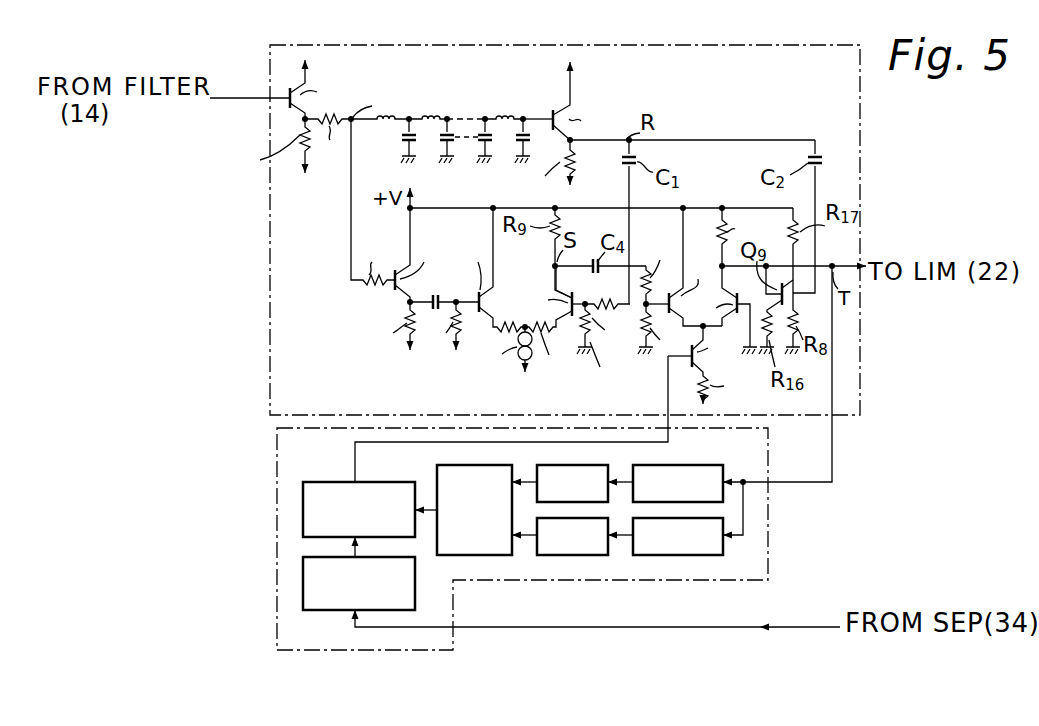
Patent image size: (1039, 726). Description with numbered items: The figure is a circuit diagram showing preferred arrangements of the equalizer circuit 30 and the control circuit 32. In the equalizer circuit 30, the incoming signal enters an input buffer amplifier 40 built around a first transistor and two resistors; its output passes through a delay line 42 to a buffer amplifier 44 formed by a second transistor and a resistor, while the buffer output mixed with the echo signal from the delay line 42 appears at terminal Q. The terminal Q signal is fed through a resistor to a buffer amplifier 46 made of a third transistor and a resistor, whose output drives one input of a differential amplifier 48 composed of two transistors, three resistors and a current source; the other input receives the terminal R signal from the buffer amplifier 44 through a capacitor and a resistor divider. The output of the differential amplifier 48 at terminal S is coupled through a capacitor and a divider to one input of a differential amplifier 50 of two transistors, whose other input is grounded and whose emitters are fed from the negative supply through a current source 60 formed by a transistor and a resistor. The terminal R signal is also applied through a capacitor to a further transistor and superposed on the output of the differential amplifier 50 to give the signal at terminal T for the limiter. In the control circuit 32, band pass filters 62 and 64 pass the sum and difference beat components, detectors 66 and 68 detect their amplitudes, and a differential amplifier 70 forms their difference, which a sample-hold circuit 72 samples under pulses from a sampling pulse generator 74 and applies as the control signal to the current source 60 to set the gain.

The equalizer circuit 30 is at (683, 45).
The control circuit 32 is at (272, 446).
The input buffer amplifier 40 is at (352, 82).
The delay line 42 is at (479, 110).
The buffer amplifier 44 is at (610, 93).
The buffer amplifier 46 is at (373, 305).
The differential amplifier 48 is at (540, 268).
The differential amplifier 50 is at (716, 241).
The current source 60 is at (697, 396).
The band pass filter 62 is at (692, 466).
The band pass filter 64 is at (683, 555).
The detector 66 is at (575, 466).
The detector 68 is at (565, 555).
The differential amplifier 70 is at (480, 466).
The sample-hold circuit 72 is at (400, 482).
The sampling pulse generator 74 is at (325, 610).